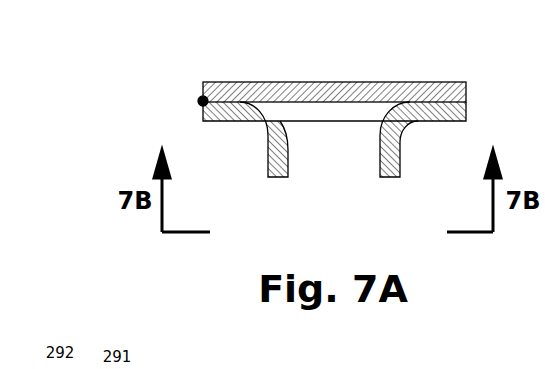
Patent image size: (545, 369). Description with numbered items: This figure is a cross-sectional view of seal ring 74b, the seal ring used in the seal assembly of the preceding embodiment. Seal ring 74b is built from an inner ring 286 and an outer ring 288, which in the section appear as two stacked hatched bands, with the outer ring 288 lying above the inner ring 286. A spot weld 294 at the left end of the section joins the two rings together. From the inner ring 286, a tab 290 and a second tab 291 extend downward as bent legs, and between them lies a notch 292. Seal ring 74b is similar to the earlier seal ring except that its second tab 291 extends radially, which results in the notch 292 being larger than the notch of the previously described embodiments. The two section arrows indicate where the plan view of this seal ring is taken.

The seal ring 74b is at (288, 129).
The inner ring 286 is at (457, 109).
The outer ring 288 is at (450, 93).
The tab 290 is at (278, 170).
The second tab 291 is at (390, 170).
The notch 292 is at (307, 115).
The spot weld 294 is at (200, 103).